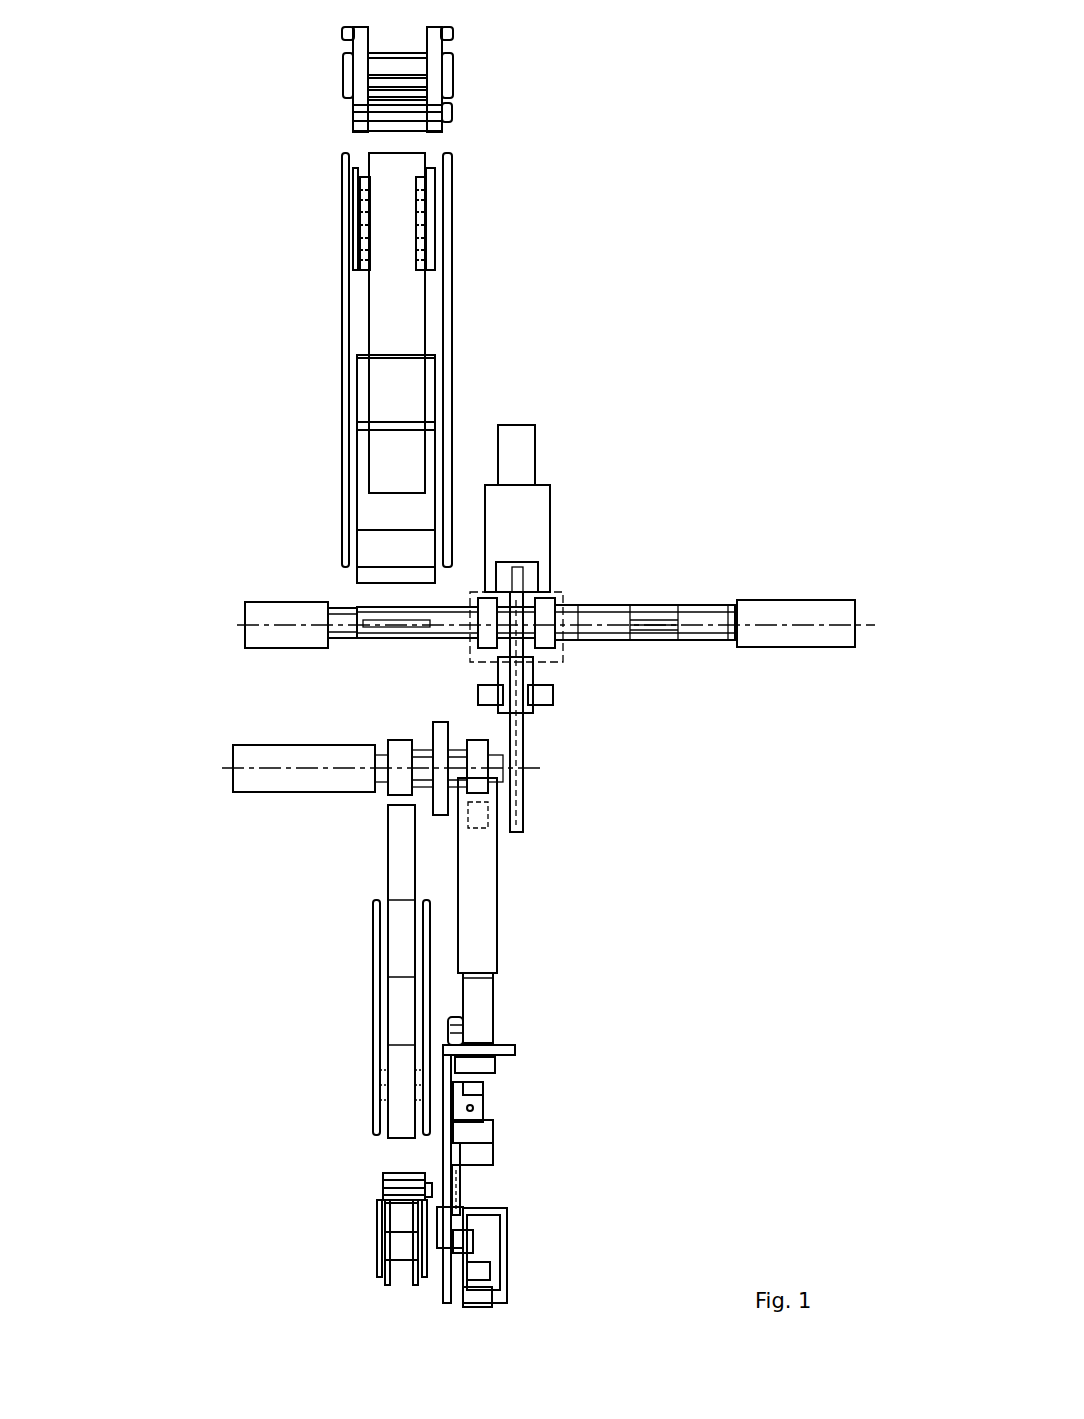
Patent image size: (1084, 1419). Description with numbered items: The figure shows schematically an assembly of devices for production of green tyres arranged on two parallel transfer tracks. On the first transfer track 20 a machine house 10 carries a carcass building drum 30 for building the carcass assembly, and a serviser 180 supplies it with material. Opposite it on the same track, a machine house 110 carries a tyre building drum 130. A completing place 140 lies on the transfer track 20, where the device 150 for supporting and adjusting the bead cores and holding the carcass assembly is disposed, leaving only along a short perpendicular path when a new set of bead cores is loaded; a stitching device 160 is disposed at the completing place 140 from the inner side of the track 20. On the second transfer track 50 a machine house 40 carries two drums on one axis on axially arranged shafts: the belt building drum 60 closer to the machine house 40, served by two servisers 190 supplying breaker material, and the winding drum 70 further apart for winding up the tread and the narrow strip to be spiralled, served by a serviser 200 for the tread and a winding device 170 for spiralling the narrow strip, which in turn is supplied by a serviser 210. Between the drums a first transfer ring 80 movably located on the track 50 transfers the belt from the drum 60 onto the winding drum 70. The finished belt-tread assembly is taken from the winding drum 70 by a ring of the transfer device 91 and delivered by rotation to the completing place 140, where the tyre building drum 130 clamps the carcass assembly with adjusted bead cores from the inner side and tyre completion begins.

The machine house 10 is at (268, 598).
The transfer track 20 is at (350, 600).
The carcass building drum 30 is at (340, 604).
The machine house 40 is at (285, 797).
The transfer track 50 is at (370, 792).
The belt building drum 60 is at (395, 803).
The winding drum 70 is at (455, 742).
The first transfer ring 80 is at (437, 816).
The transfer device 91 is at (530, 700).
The machine house 110 is at (838, 600).
The tyre building drum 130 is at (657, 638).
The completing place 140 is at (565, 590).
The device for supporting and adjusting the bead cores 150 is at (526, 556).
The stitching device 160 is at (556, 703).
The winding device 170 is at (478, 838).
The serviser 180 is at (452, 360).
The servisers 190 is at (372, 1118).
The serviser 200 is at (510, 1224).
The serviser 210 is at (495, 1097).